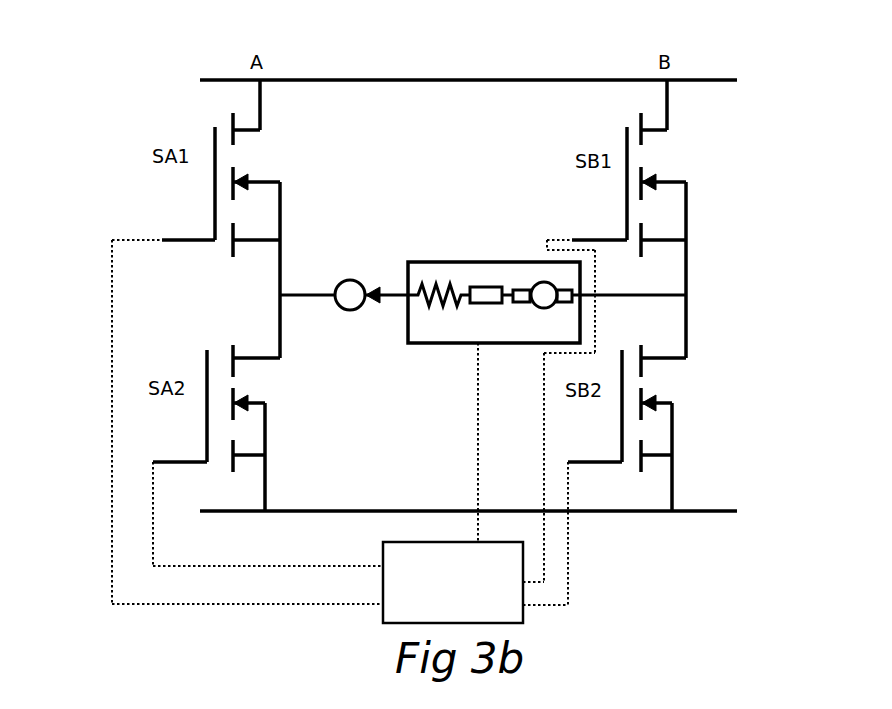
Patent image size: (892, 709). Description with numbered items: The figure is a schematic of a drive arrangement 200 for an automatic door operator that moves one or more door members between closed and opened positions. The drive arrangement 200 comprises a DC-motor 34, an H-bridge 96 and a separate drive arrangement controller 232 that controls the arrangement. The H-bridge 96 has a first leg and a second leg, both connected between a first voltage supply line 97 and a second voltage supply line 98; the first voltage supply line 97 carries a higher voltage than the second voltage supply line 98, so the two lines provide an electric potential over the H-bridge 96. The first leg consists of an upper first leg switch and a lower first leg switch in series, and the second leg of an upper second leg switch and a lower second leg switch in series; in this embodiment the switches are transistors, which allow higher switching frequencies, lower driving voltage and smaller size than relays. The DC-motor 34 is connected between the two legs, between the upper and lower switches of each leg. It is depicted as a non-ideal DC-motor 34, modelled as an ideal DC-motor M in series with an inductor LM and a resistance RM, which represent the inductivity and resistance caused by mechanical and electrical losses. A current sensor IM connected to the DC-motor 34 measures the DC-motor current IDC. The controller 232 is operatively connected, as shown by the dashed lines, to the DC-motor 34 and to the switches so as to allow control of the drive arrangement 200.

The drive arrangement 200 is at (380, 52).
The first voltage supply line 97 is at (566, 82).
The second voltage supply line 98 is at (452, 518).
The H-bridge 96 is at (325, 168).
The DC-motor 34 is at (507, 262).
The separate drive arrangement controller 232 is at (453, 582).
The current sensor IM is at (345, 280).
The DC-motor current IDC is at (390, 305).
The inductor LM is at (422, 300).
The resistance RM is at (482, 305).
The ideal DC-motor M is at (540, 305).